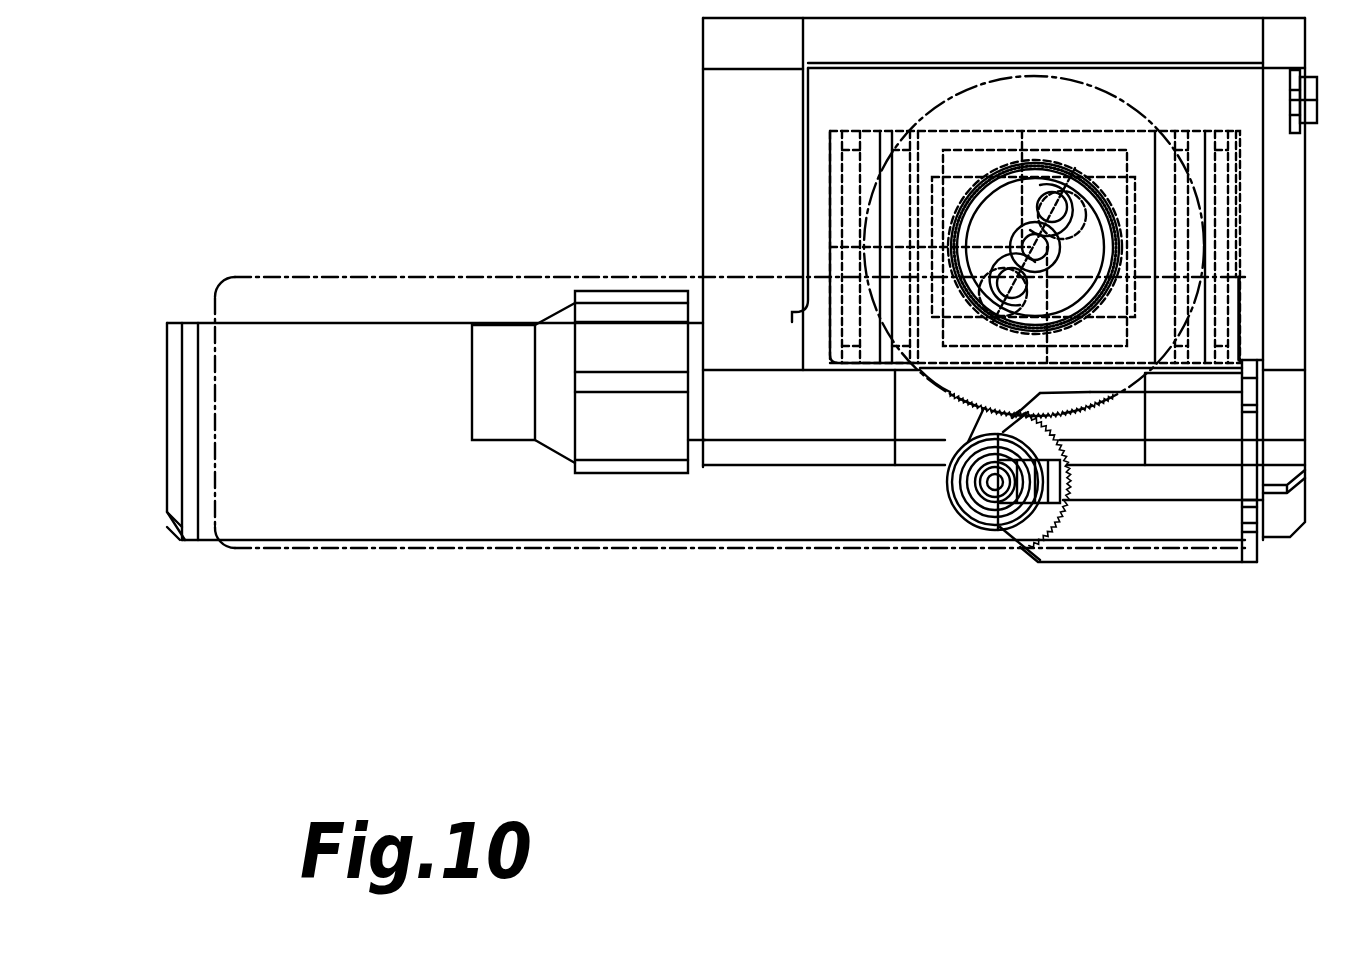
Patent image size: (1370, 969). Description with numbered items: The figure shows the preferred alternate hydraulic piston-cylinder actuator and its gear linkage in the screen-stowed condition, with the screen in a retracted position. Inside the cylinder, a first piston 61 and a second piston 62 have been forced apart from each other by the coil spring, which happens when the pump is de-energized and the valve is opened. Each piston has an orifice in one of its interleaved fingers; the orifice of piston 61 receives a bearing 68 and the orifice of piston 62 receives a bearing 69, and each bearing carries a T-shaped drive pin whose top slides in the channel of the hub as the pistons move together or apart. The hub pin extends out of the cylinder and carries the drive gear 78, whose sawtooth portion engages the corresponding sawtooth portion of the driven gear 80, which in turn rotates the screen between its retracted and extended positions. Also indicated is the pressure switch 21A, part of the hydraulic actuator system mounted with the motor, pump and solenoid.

The pressure switch 21A is at (627, 290).
The first piston 61 is at (850, 140).
The second piston 62 is at (1220, 130).
The drive gear 78 is at (1060, 80).
The bearing 69 is at (1125, 212).
The bearing 68 is at (1103, 300).
The driven gear 80 is at (1033, 533).